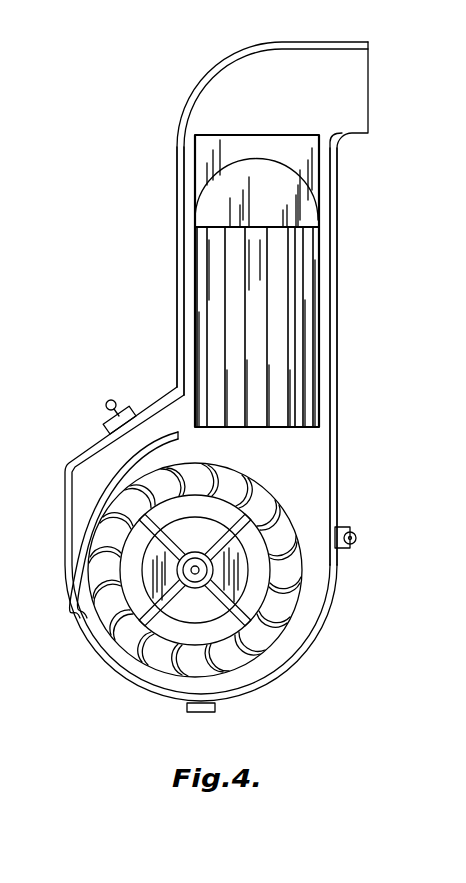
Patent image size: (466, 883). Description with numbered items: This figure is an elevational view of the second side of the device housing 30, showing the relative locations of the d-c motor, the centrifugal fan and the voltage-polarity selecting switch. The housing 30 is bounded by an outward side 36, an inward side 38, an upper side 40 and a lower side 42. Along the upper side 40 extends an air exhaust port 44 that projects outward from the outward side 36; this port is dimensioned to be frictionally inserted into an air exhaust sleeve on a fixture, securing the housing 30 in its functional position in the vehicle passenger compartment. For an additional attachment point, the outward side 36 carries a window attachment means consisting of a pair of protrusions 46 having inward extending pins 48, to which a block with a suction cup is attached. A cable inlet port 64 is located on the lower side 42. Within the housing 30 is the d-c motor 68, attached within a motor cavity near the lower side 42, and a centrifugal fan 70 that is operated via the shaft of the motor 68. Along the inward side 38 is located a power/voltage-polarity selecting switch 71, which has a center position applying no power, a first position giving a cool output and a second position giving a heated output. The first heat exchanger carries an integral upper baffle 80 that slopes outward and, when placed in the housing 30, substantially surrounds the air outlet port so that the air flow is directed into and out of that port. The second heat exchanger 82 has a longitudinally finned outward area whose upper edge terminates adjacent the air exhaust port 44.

The device housing 30 is at (176, 163).
The outward side 36 is at (337, 437).
The inward side 38 is at (176, 310).
The upper side 40 is at (289, 41).
The lower side 42 is at (172, 701).
The air exhaust port 44 is at (353, 92).
The protrusions 46 is at (346, 529).
The pins 48 is at (355, 546).
The cable inlet port 64 is at (220, 708).
The d-c motor 68 is at (242, 585).
The centrifugal fan 70 is at (110, 610).
The power/voltage-polarity selecting switch 71 is at (107, 398).
The upper baffle 80 is at (272, 197).
The second heat exchanger 82 is at (273, 329).